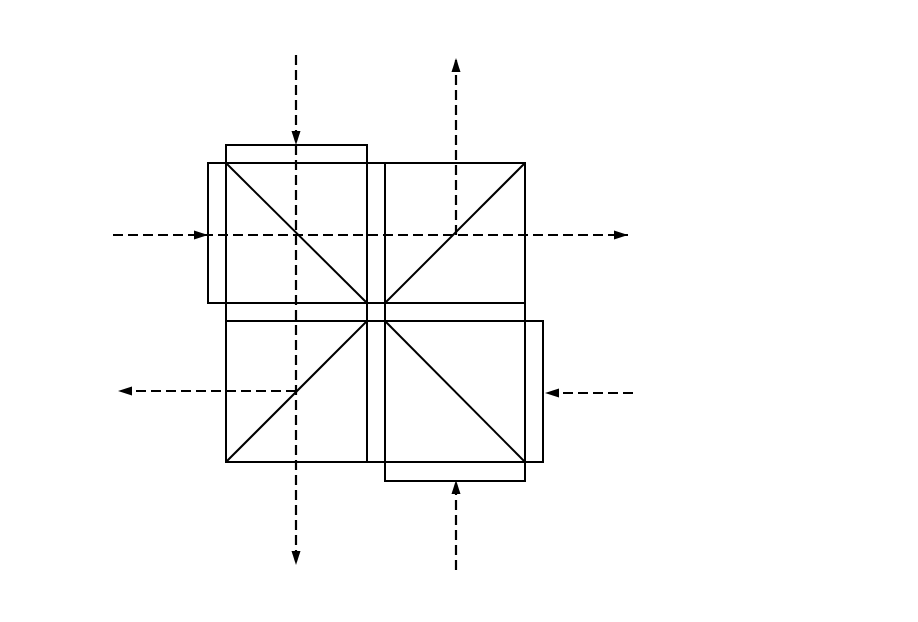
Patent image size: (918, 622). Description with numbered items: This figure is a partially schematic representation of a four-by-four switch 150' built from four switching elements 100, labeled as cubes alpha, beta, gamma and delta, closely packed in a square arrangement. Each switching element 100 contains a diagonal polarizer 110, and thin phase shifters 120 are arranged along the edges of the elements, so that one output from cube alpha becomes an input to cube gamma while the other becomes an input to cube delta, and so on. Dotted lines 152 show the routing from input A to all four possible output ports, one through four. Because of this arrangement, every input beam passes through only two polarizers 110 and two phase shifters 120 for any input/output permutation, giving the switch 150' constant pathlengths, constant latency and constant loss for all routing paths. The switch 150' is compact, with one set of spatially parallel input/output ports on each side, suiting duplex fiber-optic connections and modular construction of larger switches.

The 4×4 switch 150' is at (416, 306).
The switching element 100 is at (500, 163).
The polarizer 110 is at (275, 211).
The phase shifter 120 is at (325, 145).
The dotted lines 152 is at (148, 235).